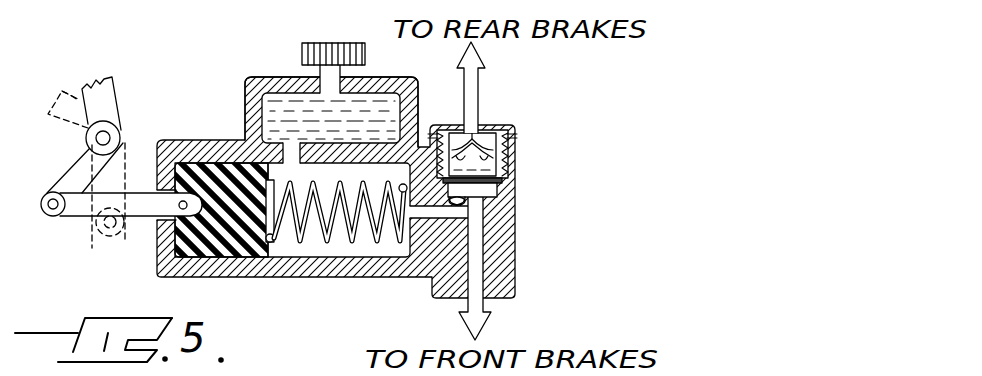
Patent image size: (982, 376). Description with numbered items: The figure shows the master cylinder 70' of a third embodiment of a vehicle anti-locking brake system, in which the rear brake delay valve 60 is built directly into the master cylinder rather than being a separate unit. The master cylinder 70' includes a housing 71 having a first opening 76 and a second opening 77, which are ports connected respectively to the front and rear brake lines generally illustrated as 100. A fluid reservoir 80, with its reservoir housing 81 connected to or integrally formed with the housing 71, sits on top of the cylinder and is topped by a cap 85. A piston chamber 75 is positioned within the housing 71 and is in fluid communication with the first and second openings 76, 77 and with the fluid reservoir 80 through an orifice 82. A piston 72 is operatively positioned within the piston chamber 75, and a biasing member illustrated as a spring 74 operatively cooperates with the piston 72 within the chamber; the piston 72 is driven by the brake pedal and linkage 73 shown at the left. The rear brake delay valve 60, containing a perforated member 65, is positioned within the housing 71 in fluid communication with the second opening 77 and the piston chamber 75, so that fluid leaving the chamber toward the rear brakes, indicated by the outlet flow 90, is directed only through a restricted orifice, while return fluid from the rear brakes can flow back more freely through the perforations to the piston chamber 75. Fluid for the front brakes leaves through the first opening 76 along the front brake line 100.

The rear brake delay valve 60 is at (518, 118).
The perforated member 65 is at (498, 150).
The master cylinder 70' is at (416, 187).
The housing 71 is at (517, 230).
The piston 72 is at (252, 248).
The brake pedal and linkage 73 is at (97, 238).
The spring 74 is at (362, 250).
The piston chamber 75 is at (297, 250).
The first opening 76 is at (483, 283).
The second opening 77 is at (470, 200).
The fluid reservoir 80 is at (205, 96).
The reservoir housing 81 is at (246, 96).
The orifice 82 is at (280, 157).
The reservoir cap 85 is at (310, 43).
The rear brake outlet flow 90 is at (472, 82).
The front and rear brake lines 100 is at (483, 310).